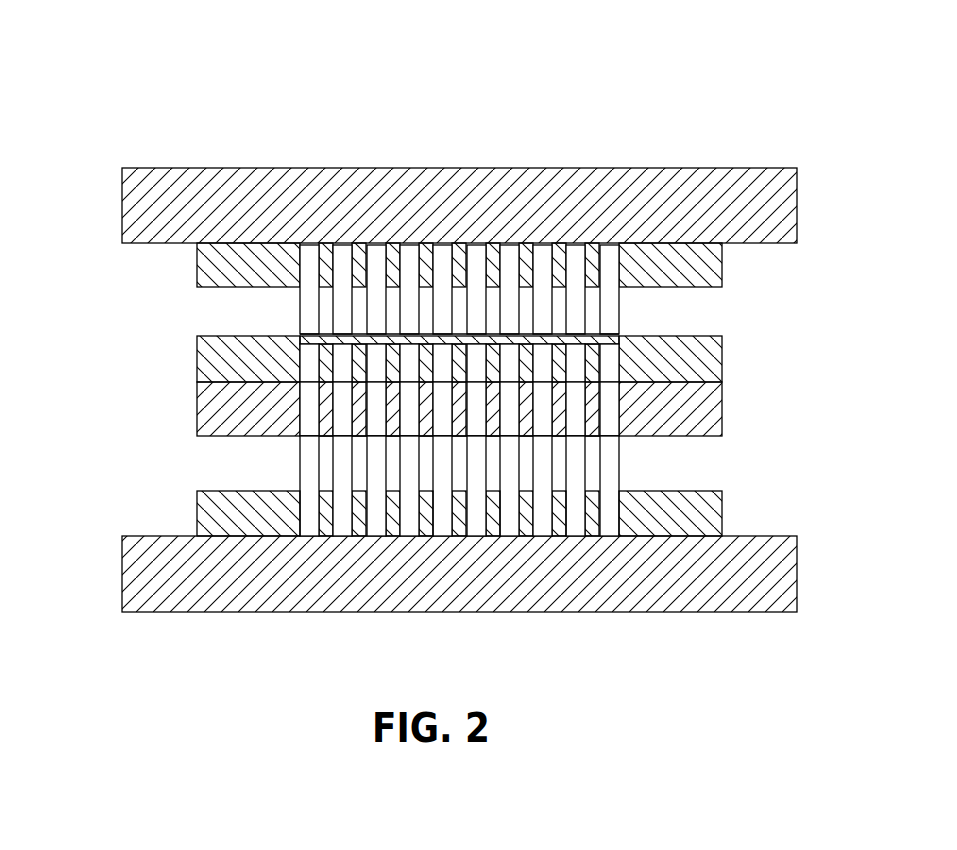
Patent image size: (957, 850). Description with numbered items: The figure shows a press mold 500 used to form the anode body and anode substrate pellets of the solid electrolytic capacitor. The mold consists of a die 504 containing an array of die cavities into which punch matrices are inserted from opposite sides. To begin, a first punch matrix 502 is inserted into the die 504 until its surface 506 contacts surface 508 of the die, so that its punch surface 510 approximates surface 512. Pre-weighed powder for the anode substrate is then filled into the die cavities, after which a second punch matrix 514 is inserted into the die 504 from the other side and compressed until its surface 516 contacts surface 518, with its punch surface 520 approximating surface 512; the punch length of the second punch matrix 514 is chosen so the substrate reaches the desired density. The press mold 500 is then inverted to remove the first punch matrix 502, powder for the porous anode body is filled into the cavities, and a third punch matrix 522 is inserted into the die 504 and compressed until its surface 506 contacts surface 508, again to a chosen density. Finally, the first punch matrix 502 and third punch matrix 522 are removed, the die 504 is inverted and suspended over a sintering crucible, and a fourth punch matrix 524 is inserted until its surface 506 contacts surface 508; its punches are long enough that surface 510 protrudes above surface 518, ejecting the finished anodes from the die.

The press mold 500 is at (216, 88).
The first punch matrix 502 is at (287, 455).
The die 504 is at (151, 394).
The surface 506 is at (734, 490).
The surface 508 is at (734, 433).
The punch surface 510 is at (633, 445).
The surface 512 is at (734, 382).
The second punch matrix 514 is at (287, 317).
The surface 516 is at (734, 285).
The surface 518 is at (734, 337).
The punch surface 520 is at (634, 326).
The third punch matrix 522 is at (324, 486).
The fourth punch matrix 524 is at (476, 486).